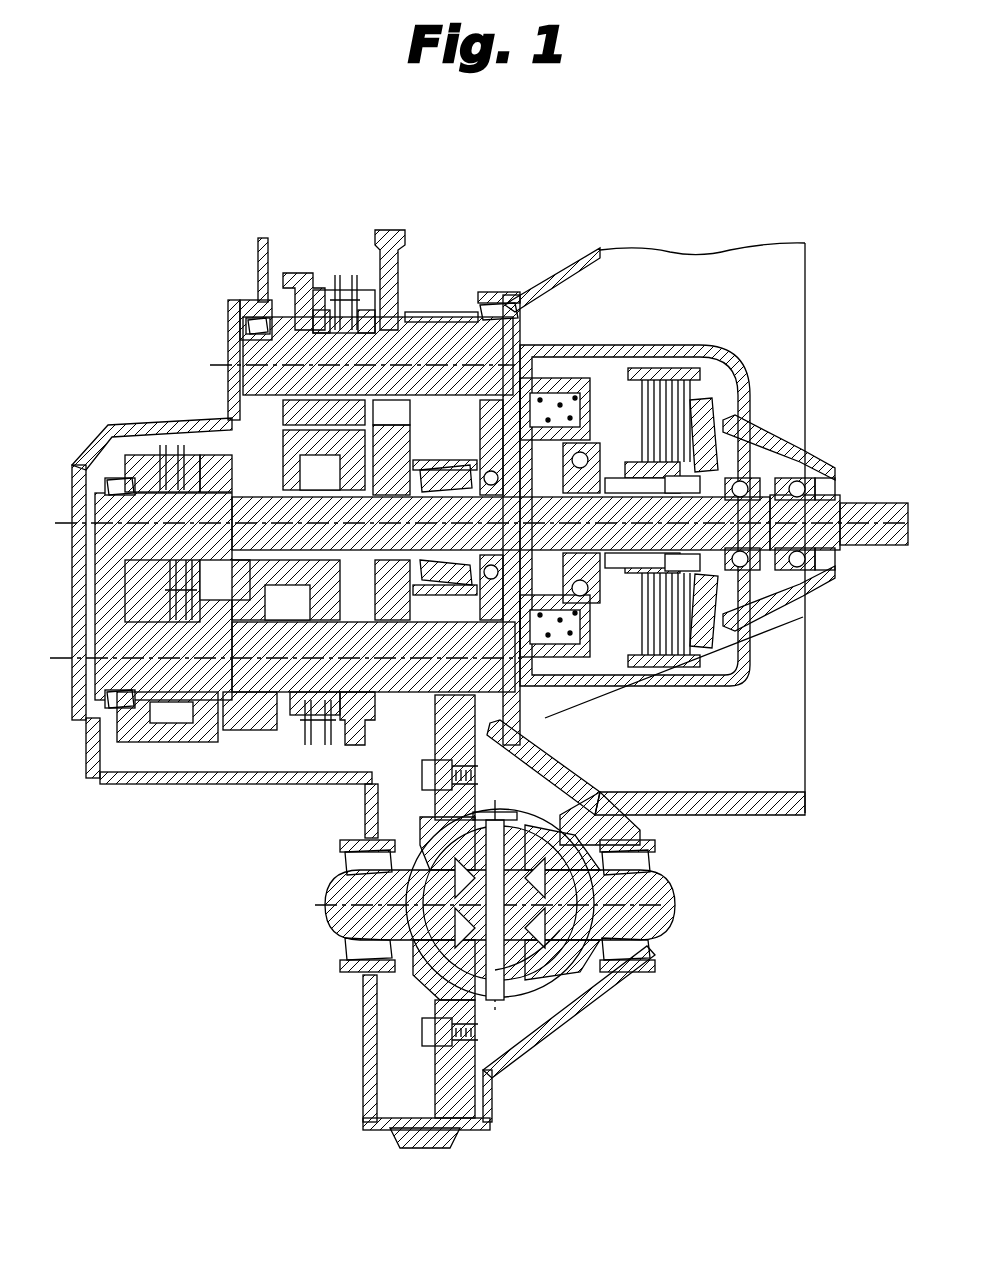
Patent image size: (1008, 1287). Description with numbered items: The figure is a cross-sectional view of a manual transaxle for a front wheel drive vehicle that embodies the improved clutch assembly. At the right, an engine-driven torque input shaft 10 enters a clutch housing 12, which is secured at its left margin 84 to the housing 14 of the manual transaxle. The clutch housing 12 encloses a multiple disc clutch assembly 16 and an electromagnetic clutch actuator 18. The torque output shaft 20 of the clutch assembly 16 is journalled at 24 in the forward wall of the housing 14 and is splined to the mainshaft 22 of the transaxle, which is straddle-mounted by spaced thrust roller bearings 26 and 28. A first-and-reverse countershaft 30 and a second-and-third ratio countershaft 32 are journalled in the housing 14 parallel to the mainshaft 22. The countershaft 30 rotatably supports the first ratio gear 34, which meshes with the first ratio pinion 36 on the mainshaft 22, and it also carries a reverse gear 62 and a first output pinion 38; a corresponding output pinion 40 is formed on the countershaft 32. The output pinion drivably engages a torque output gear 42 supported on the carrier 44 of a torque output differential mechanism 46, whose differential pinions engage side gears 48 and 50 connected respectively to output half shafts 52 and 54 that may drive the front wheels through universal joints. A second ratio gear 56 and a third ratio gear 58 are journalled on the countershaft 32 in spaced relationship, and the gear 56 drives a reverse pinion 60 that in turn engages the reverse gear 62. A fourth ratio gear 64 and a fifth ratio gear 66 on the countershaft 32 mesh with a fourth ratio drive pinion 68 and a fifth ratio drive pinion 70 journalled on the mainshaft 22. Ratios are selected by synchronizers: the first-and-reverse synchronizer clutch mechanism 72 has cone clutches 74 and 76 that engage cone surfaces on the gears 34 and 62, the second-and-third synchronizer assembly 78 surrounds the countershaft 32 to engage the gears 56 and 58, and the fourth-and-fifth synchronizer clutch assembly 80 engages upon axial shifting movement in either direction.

The torque input shaft 10 is at (888, 495).
The clutch housing 12 is at (625, 360).
The housing 14 is at (345, 790).
The multiple disc clutch assembly 16 is at (674, 380).
The electromagnetic clutch actuator 18 is at (563, 382).
The torque output shaft 20 is at (790, 565).
The mainshaft 22 is at (262, 497).
The journal 24 is at (522, 478).
The thrust roller bearing 26 is at (430, 563).
The thrust roller bearing 28 is at (103, 478).
The first-and-reverse countershaft 30 is at (400, 338).
The second-and-third ratio countershaft 32 is at (232, 665).
The first ratio gear 34 is at (393, 245).
The first ratio pinion 36 is at (398, 556).
The first output pinion 38 is at (458, 322).
The output pinion 40 is at (435, 722).
The torque output gear 42 is at (457, 1053).
The carrier 44 is at (560, 825).
The torque output differential mechanism 46 is at (650, 947).
The side gear 48 is at (395, 845).
The side gear 50 is at (570, 934).
The output half shaft 52 is at (345, 905).
The output half shaft 54 is at (613, 890).
The second ratio gear 56 is at (350, 730).
The third ratio gear 58 is at (267, 727).
The reverse pinion 60 is at (330, 470).
The reverse gear 62 is at (305, 283).
The fourth ratio gear 64 is at (210, 616).
The fifth ratio gear 66 is at (175, 612).
The fourth ratio drive pinion 68 is at (148, 555).
The fifth ratio drive pinion 70 is at (125, 480).
The first-and-reverse synchronizer clutch mechanism 72 is at (344, 268).
The synchronizer cone clutch 74 is at (362, 318).
The synchronizer cone clutch 76 is at (318, 300).
The second-and-third gear ratio synchronizer assembly 78 is at (303, 740).
The fourth-and-fifth ratio synchronizer clutch assembly 80 is at (100, 727).
The left margin 84 is at (545, 718).